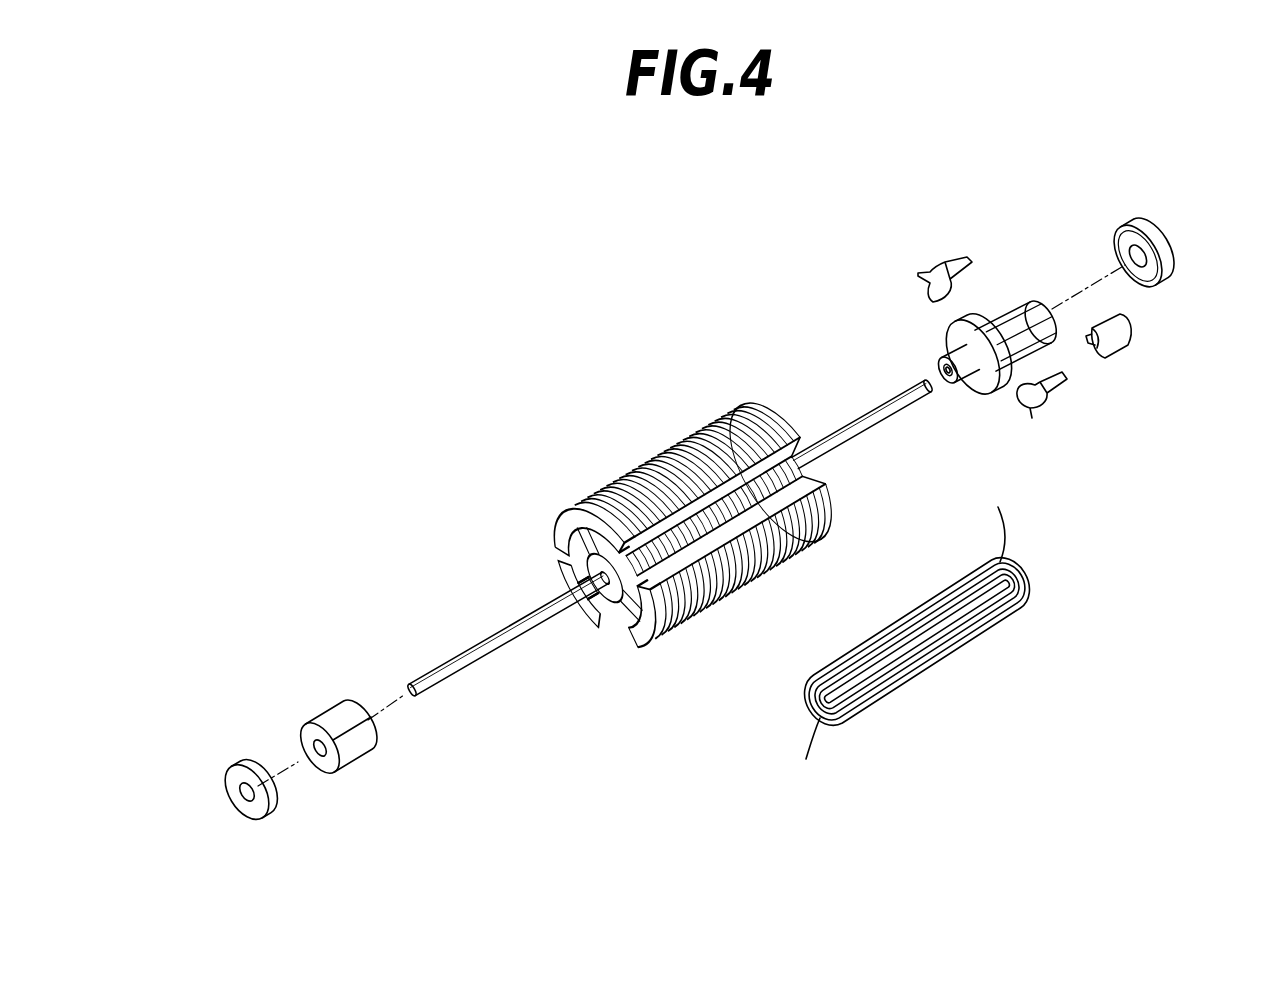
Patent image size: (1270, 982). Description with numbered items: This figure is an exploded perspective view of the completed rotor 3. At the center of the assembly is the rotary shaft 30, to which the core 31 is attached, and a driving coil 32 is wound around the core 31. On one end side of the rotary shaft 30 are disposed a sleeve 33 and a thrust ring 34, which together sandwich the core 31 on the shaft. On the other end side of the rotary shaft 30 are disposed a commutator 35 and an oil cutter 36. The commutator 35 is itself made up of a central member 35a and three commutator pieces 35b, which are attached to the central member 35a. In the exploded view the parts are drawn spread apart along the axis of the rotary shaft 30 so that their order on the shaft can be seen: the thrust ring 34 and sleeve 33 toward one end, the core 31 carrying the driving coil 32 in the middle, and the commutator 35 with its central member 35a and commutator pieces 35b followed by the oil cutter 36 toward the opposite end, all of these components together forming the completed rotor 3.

The completed rotor 3 is at (722, 180).
The rotary shaft 30 is at (488, 650).
The core 31 is at (650, 460).
The driving coil 32 is at (968, 638).
The sleeve 33 is at (333, 720).
The thrust ring 34 is at (260, 808).
The commutator 35 is at (1037, 297).
The central member 35a is at (947, 388).
The commutator pieces 35b is at (944, 270).
The oil cutter 36 is at (1172, 248).